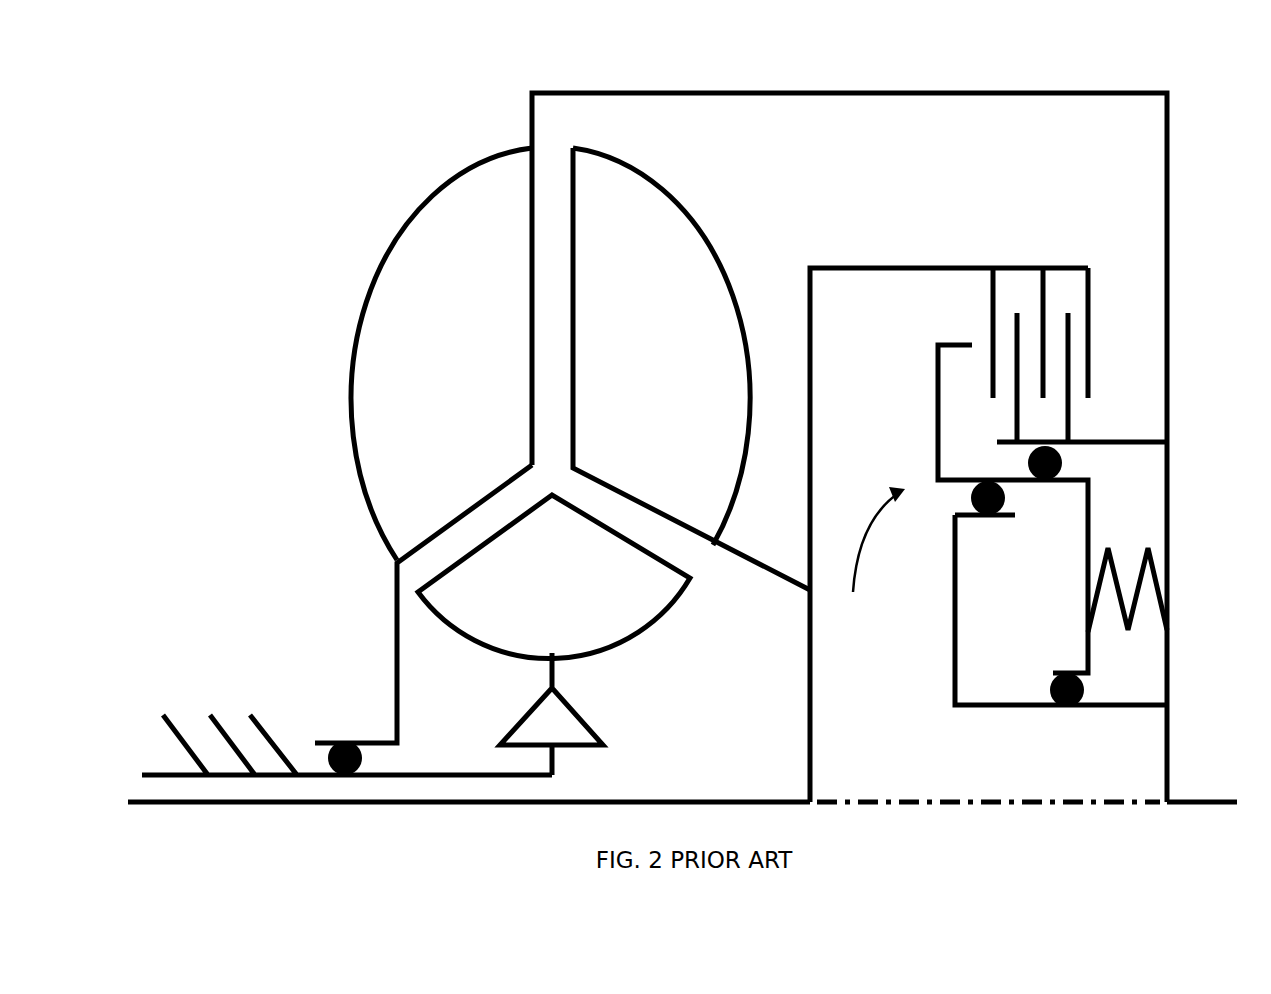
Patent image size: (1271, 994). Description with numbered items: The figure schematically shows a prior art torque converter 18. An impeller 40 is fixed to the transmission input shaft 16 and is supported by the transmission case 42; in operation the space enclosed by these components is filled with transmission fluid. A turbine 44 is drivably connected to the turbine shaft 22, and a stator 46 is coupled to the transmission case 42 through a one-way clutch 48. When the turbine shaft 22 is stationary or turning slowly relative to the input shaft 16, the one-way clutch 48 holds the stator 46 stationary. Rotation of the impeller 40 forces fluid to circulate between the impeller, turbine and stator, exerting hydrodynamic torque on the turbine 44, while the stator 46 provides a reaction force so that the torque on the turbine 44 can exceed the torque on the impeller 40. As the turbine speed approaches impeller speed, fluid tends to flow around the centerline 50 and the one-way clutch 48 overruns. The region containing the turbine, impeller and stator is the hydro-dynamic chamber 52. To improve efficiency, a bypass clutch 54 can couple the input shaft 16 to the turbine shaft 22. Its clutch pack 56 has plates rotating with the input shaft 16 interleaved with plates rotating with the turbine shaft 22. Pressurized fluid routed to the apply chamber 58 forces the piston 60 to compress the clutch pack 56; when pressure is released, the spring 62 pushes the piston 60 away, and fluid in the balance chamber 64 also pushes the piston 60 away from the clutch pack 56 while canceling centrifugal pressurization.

The input shaft 16 is at (1192, 800).
The torque converter 18 is at (577, 48).
The turbine shaft 22 is at (672, 802).
The impeller 40 is at (381, 259).
The transmission case 42 is at (180, 732).
The turbine 44 is at (683, 210).
The stator 46 is at (677, 598).
The one-way clutch 48 is at (588, 722).
The centerline 50 is at (905, 802).
The hydro-dynamic chamber 52 is at (949, 487).
The bypass clutch 54 is at (879, 559).
The clutch pack 56 is at (1018, 268).
The apply chamber 58 is at (1061, 610).
The piston 60 is at (937, 405).
The spring 62 is at (1130, 632).
The balance chamber 64 is at (1127, 562).